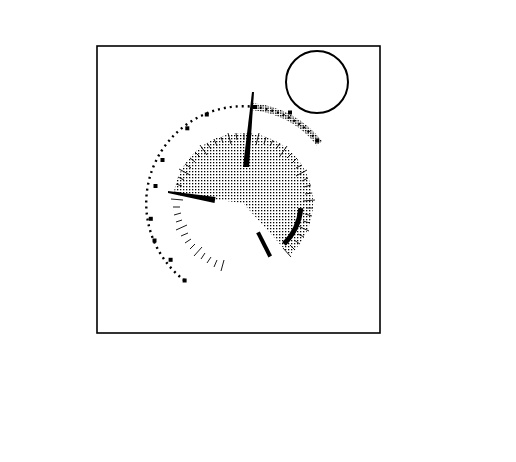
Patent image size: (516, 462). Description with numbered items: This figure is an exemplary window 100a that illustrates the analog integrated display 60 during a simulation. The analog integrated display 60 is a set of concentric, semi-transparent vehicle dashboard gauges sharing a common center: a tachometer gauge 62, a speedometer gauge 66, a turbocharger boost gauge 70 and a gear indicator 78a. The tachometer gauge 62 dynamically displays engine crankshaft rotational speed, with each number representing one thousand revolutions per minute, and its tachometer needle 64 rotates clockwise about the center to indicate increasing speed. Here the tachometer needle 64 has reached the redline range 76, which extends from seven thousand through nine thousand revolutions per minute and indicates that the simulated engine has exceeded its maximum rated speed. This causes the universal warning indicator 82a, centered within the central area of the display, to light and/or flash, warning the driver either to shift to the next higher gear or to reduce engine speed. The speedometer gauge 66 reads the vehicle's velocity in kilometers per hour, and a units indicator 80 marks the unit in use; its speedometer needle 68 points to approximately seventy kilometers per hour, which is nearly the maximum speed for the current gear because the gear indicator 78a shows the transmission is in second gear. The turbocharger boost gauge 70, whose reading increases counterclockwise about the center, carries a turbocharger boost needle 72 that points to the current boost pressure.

The window 100a is at (110, 370).
The analog integrated display 60 is at (148, 298).
The tachometer gauge 62 is at (147, 147).
The tachometer needle 64 is at (251, 95).
The speedometer gauge 66 is at (168, 192).
The speedometer needle 68 is at (188, 190).
The turbocharger boost gauge 70 is at (285, 244).
The turbocharger boost needle 72 is at (258, 240).
The redline range 76 is at (316, 122).
The gear indicator 78a is at (344, 68).
The speed unit label 80 is at (267, 266).
The universal warning indicator 82a is at (292, 188).